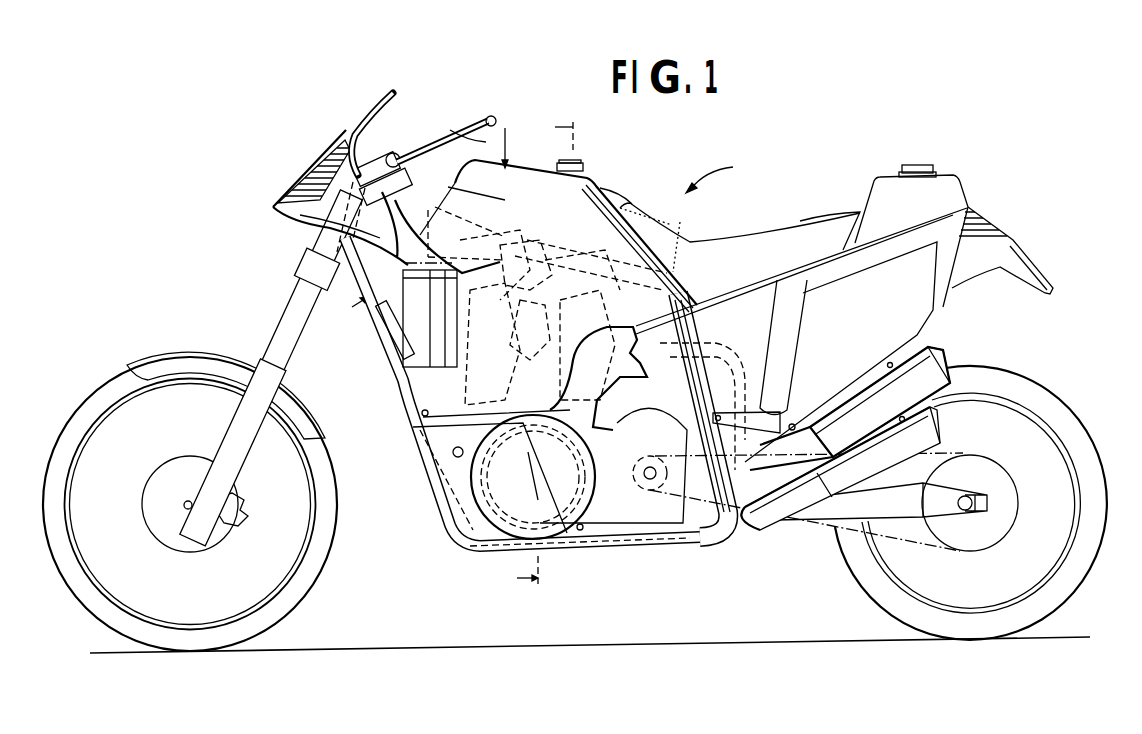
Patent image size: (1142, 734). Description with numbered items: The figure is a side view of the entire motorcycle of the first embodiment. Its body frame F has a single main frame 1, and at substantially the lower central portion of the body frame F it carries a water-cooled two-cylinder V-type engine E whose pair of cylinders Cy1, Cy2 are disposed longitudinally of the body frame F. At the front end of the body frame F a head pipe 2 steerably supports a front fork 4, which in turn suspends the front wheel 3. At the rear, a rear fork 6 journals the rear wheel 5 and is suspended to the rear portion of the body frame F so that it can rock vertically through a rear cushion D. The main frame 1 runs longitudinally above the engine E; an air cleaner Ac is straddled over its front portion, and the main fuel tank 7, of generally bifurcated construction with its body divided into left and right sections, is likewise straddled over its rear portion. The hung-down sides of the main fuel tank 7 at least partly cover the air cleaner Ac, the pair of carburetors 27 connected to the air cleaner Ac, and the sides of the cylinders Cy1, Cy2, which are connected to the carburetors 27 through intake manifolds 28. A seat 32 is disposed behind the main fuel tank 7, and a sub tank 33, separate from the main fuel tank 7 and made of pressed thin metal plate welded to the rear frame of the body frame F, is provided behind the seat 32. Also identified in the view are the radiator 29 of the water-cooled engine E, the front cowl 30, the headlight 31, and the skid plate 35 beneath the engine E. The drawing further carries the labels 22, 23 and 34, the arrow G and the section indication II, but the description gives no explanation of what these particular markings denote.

The main frame 1 is at (421, 205).
The head pipe 2 is at (348, 262).
The front wheel 3 is at (338, 522).
The front fork 4 is at (290, 311).
The rear wheel 5 is at (1108, 485).
The rear fork 6 is at (835, 502).
The main fuel tank 7 is at (592, 192).
The seat 22 is at (680, 240).
The fuel filler cap 23 is at (580, 165).
The carburetor 27 is at (548, 283).
The intake manifold 28 is at (540, 316).
The radiator 29 is at (410, 330).
The front cowl 30 is at (290, 212).
The headlight 31 is at (295, 177).
The seat 32 is at (718, 243).
The sub tank 33 is at (960, 180).
The exhaust muffler 34 is at (768, 524).
The skid plate 35 is at (540, 497).
The air cleaner Ac is at (509, 136).
The center of gravity direction G is at (721, 172).
The rear cushion D is at (700, 330).
The engine E is at (635, 393).
The body frame F is at (352, 311).
The cylinder Cy1 is at (495, 317).
The cylinder Cy2 is at (582, 325).
The section line II- II is at (544, 356).